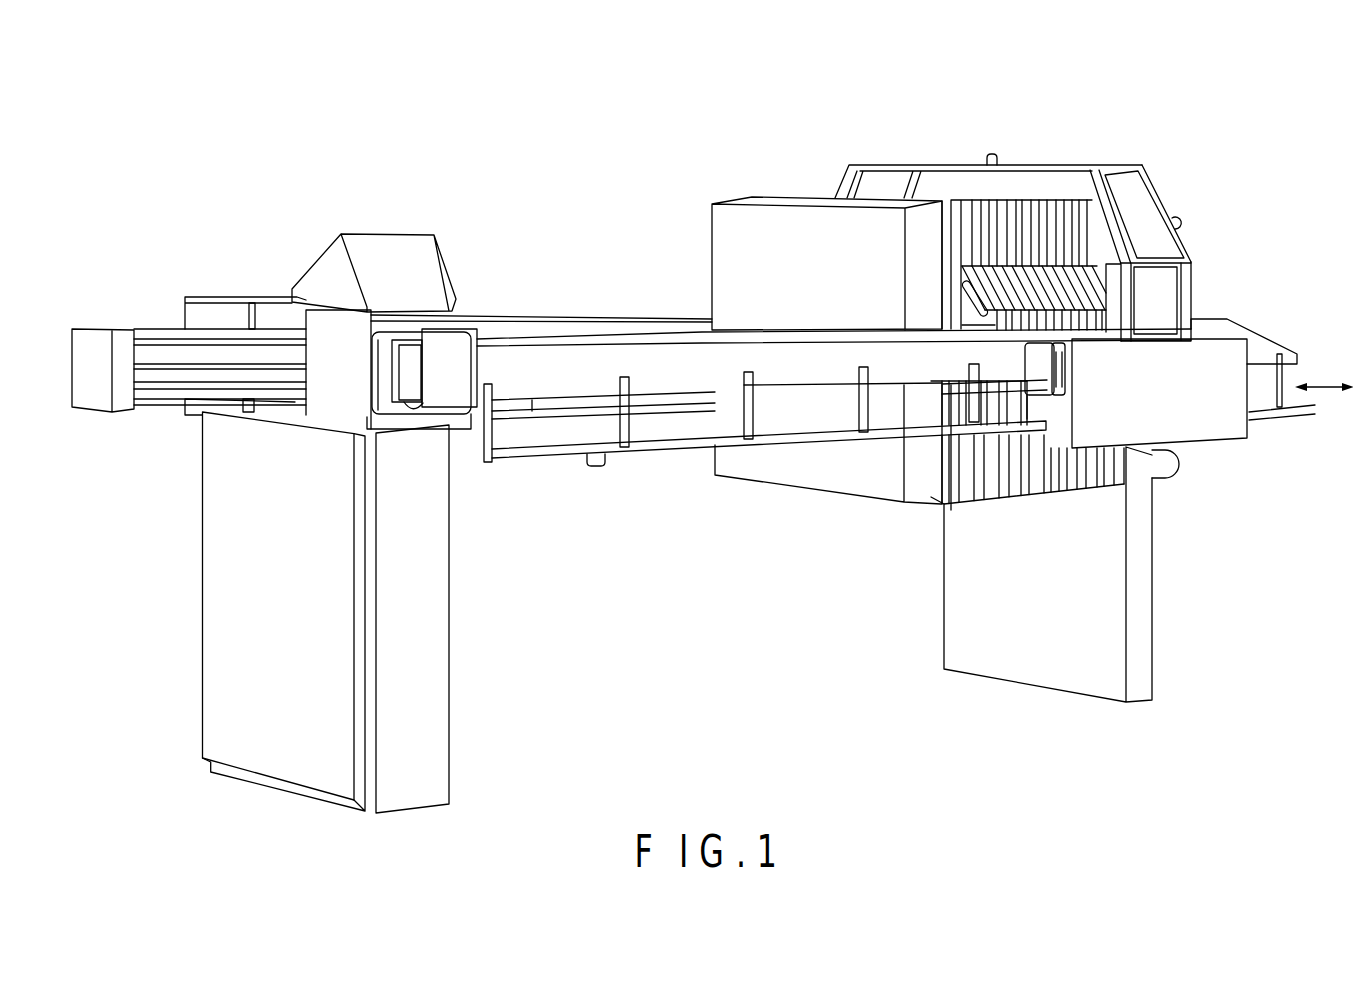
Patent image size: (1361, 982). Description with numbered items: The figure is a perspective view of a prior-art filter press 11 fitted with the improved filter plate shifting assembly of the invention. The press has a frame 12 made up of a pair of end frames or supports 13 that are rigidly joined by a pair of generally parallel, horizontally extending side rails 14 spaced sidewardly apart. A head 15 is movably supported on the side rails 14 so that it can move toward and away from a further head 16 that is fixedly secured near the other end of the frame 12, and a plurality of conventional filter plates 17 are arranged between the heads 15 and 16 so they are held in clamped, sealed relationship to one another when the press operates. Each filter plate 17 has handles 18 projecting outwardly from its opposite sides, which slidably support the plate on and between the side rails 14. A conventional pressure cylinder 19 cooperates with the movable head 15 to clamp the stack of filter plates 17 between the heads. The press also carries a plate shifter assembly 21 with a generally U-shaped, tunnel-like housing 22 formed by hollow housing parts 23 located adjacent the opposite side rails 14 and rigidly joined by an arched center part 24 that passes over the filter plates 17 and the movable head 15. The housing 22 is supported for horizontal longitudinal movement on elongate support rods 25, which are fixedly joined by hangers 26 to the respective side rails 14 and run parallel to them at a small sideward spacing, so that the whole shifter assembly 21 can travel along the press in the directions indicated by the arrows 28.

The filter press 11 is at (551, 132).
The frame 12 is at (460, 606).
The end frames or supports 13 is at (436, 686).
The side rails 14 is at (627, 318).
The head 15 is at (770, 193).
The further head 16 is at (1193, 277).
The filter plates 17 is at (1005, 225).
The handles 18 is at (1030, 273).
The pressure cylinder 19 is at (160, 350).
The plate shifter assembly 21 is at (1151, 156).
The housing 22 is at (927, 150).
The housing parts 23 is at (1237, 433).
The arched center part 24 is at (1013, 162).
The support rods 25 is at (541, 463).
The hangers 26 is at (625, 432).
The arrows 28 is at (1332, 382).